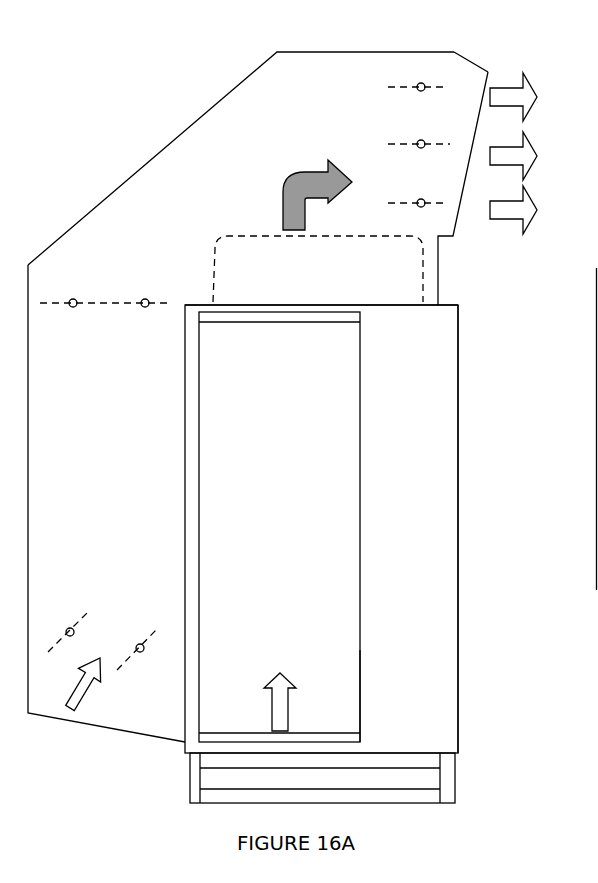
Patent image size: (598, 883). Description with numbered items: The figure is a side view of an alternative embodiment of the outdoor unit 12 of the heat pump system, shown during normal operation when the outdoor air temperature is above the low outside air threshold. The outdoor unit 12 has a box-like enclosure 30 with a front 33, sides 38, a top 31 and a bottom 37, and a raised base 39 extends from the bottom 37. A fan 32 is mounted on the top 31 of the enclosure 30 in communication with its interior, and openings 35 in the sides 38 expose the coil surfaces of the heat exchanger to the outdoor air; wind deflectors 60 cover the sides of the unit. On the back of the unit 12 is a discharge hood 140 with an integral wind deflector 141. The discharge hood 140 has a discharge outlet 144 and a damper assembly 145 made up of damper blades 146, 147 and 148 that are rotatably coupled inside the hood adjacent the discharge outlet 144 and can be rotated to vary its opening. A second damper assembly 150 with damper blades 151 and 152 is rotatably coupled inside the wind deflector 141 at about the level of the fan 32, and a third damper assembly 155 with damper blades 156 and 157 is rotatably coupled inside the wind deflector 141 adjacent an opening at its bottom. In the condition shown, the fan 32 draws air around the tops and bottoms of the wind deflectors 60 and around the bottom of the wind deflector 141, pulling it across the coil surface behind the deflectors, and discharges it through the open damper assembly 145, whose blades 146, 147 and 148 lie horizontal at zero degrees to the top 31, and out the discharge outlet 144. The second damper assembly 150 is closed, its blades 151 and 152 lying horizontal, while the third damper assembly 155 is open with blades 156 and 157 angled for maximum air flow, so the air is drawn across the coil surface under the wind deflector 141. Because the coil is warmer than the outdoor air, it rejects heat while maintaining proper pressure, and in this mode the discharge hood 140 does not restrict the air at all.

The outdoor unit 12 is at (476, 389).
The enclosure 30 is at (458, 467).
The top 31 is at (387, 305).
The fan 32 is at (402, 250).
The front 33 is at (458, 590).
The openings 35 is at (363, 437).
The bottom 37 is at (398, 745).
The sides 38 is at (405, 712).
The raised base 39 is at (193, 773).
The wind deflectors 60 is at (333, 543).
The discharge hood 140 is at (233, 89).
The wind deflector 141 is at (28, 283).
The discharge outlet 144 is at (480, 100).
The damper assembly 145 is at (428, 113).
The damper blade 146 is at (440, 85).
The damper blade 147 is at (438, 140).
The damper blade 148 is at (450, 202).
The second damper assembly 150 is at (100, 310).
The damper blade 151 is at (50, 302).
The damper blade 152 is at (113, 302).
The third damper assembly 155 is at (128, 636).
The damper blade 156 is at (45, 655).
The damper blade 157 is at (152, 633).